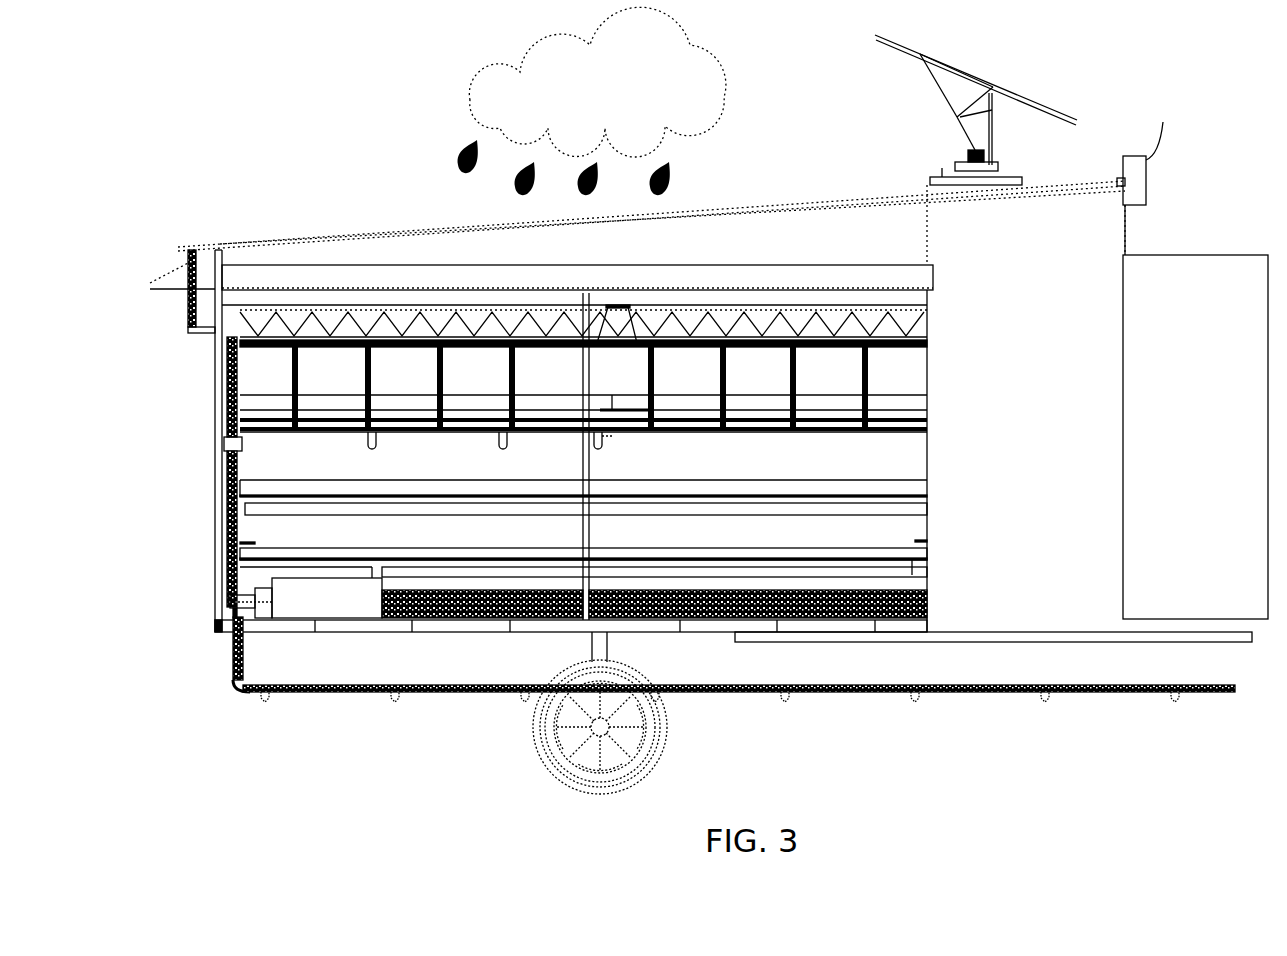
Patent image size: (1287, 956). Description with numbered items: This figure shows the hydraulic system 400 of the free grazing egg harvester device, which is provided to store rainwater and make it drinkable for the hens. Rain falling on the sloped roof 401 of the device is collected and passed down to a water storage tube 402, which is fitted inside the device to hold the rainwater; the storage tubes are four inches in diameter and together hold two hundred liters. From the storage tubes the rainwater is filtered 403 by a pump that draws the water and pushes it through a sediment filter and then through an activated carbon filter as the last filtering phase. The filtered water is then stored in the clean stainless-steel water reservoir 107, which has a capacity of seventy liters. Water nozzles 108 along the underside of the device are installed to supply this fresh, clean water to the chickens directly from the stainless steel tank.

The hydraulic system 400 is at (243, 105).
The roof 401 is at (275, 235).
The water storage tube 402 is at (780, 620).
The filtering 403 is at (225, 584).
The water reservoir 107 is at (290, 605).
The water nozzles 108 is at (455, 688).